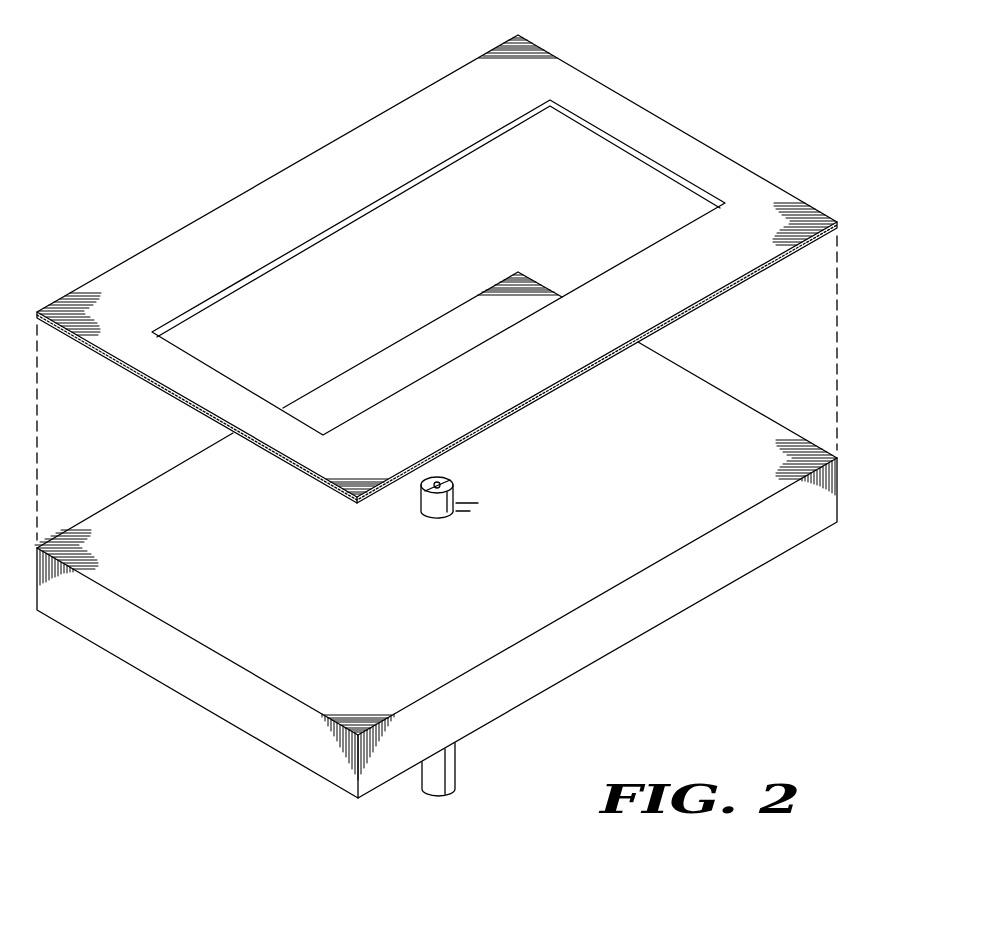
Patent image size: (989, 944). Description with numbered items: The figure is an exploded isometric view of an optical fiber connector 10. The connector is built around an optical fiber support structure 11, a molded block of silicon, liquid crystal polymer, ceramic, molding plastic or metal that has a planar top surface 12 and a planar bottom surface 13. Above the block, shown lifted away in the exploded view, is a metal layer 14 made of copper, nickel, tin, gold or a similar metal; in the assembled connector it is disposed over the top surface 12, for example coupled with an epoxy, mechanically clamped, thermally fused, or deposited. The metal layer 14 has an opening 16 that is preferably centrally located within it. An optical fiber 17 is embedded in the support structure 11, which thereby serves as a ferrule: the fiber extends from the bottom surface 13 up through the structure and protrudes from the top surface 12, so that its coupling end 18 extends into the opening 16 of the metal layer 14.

The optical fiber connector 10 is at (436, 416).
The optical fiber support structure 11 is at (436, 535).
The top surface 12 is at (742, 402).
The bottom surface 13 is at (667, 627).
The metal layer 14 is at (683, 130).
The opening 16 is at (345, 213).
The optical fiber 17 is at (430, 512).
The coupling end 18 is at (450, 478).